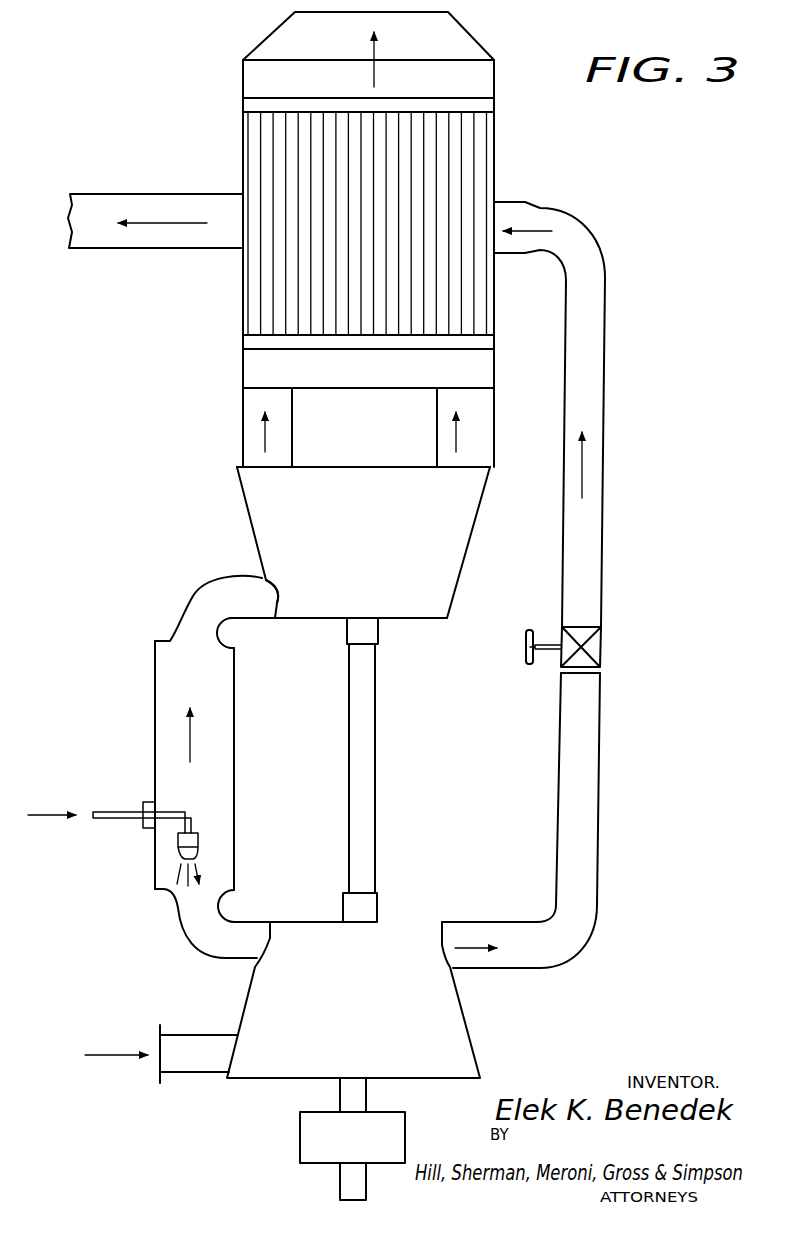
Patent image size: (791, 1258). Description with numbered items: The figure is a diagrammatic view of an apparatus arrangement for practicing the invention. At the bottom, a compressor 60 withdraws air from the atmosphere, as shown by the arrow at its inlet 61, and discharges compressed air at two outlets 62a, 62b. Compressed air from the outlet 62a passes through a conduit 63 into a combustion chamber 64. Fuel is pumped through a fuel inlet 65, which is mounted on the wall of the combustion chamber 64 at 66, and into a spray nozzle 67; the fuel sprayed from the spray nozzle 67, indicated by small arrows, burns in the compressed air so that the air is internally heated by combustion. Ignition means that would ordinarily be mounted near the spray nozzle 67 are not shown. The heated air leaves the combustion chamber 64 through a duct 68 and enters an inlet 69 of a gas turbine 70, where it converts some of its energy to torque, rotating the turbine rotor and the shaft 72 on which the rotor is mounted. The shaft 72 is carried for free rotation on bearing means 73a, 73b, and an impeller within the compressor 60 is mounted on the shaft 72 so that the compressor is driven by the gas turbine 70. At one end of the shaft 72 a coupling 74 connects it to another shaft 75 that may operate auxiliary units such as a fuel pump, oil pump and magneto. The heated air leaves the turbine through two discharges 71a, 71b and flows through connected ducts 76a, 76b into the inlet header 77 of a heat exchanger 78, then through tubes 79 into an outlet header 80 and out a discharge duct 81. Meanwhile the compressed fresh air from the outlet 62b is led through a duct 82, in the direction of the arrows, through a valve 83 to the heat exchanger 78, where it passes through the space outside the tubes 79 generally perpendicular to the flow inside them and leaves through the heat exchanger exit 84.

The compressor 60 is at (463, 1052).
The inlet 61 is at (160, 1035).
The outlet 62a is at (270, 938).
The outlet 62b is at (441, 948).
The conduit 63 is at (183, 936).
The combustion chamber 64 is at (155, 758).
The fuel inlet 65 is at (100, 820).
The mounting on wall of combustion chamber 66 is at (149, 830).
The spray nozzle 67 is at (198, 840).
The duct 68 is at (190, 595).
The inlet of gas turbine 69 is at (276, 593).
The gas turbine 70 is at (262, 516).
The turbine discharge 71a is at (277, 465).
The turbine discharge 71b is at (470, 466).
The shaft 72 is at (376, 676).
The bearing means 73a is at (380, 630).
The bearing means 73b is at (378, 905).
The coupling 74 is at (406, 1135).
The shaft 75 is at (340, 1180).
The duct 76a is at (243, 420).
The duct 76b is at (494, 420).
The inlet header 77 is at (243, 370).
The heat exchanger 78 is at (243, 275).
The tubes 79 is at (272, 298).
The outlet header 80 is at (497, 85).
The discharge duct 81 is at (469, 45).
The duct 82 is at (606, 218).
The valve 83 is at (604, 647).
The heat exchanger exit 84 is at (140, 194).